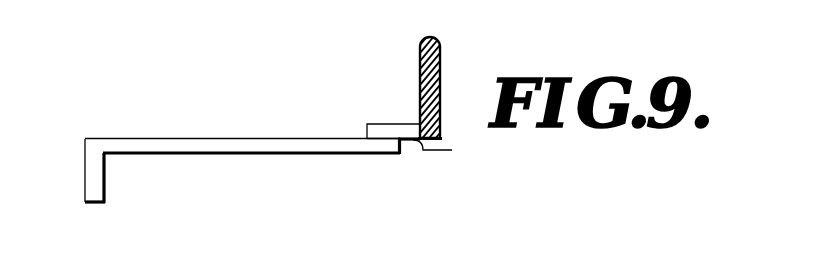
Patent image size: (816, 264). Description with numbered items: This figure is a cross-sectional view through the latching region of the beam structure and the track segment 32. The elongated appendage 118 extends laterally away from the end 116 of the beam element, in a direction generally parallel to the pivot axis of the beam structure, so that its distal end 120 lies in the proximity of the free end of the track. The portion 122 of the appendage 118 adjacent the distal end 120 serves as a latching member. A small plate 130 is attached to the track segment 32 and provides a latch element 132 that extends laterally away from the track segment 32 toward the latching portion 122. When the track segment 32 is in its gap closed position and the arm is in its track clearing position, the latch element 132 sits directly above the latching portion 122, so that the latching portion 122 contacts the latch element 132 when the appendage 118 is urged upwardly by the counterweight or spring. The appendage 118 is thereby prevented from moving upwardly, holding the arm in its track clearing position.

The track segment 32 is at (435, 52).
The end of beam element 116 is at (92, 181).
The appendage 118 is at (213, 141).
The distal end 120 is at (398, 153).
The latching portion 122 is at (383, 142).
The plate 130 is at (390, 123).
The latch element 132 is at (452, 152).